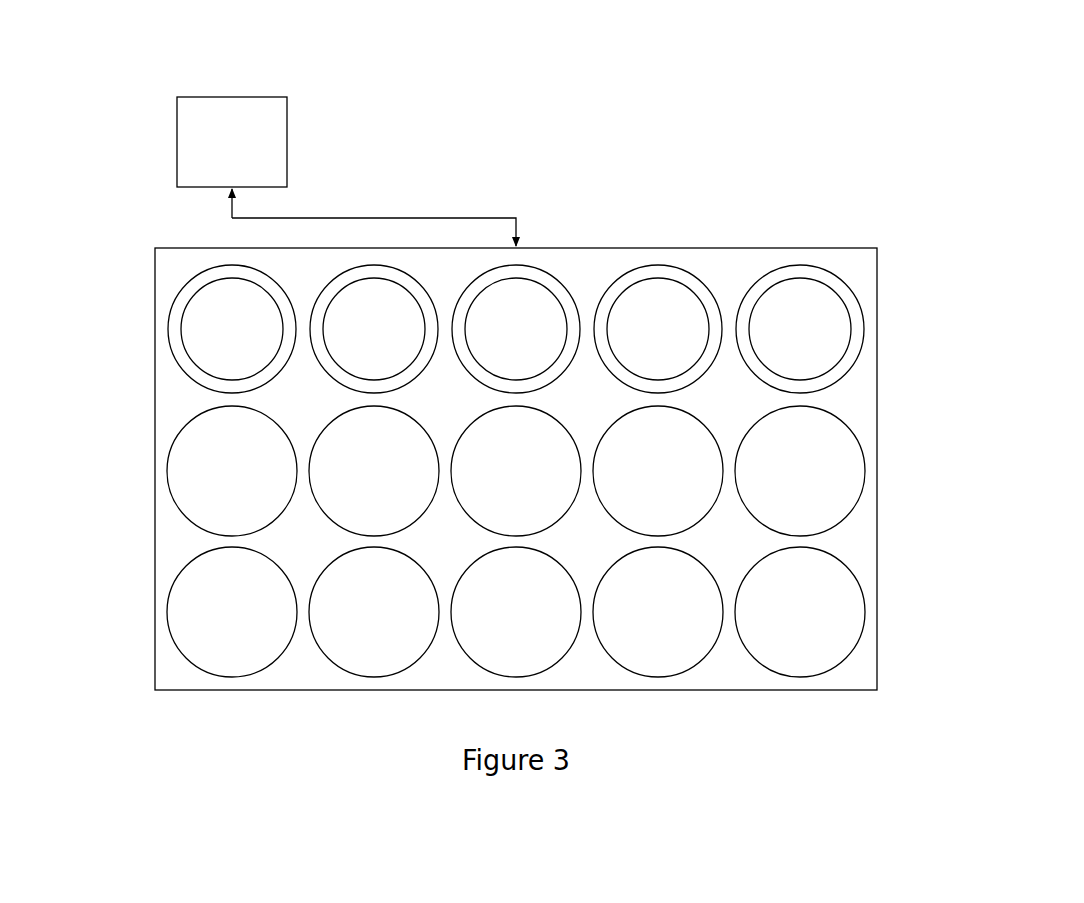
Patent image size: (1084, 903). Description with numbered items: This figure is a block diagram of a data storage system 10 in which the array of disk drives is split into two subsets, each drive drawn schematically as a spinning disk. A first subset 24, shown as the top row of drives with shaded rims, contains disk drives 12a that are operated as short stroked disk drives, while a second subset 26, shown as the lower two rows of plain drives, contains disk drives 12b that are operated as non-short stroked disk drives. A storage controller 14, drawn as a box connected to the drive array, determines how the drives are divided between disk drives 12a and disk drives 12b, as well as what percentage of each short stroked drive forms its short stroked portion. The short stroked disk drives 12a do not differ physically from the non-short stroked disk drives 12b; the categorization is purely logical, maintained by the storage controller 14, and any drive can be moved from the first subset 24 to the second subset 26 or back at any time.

The data storage system 10 is at (697, 115).
The disk drives 12a is at (168, 330).
The disk drives 12b is at (167, 470).
The storage controller 14 is at (287, 142).
The first subset 24 is at (501, 328).
The second subset 26 is at (501, 541).